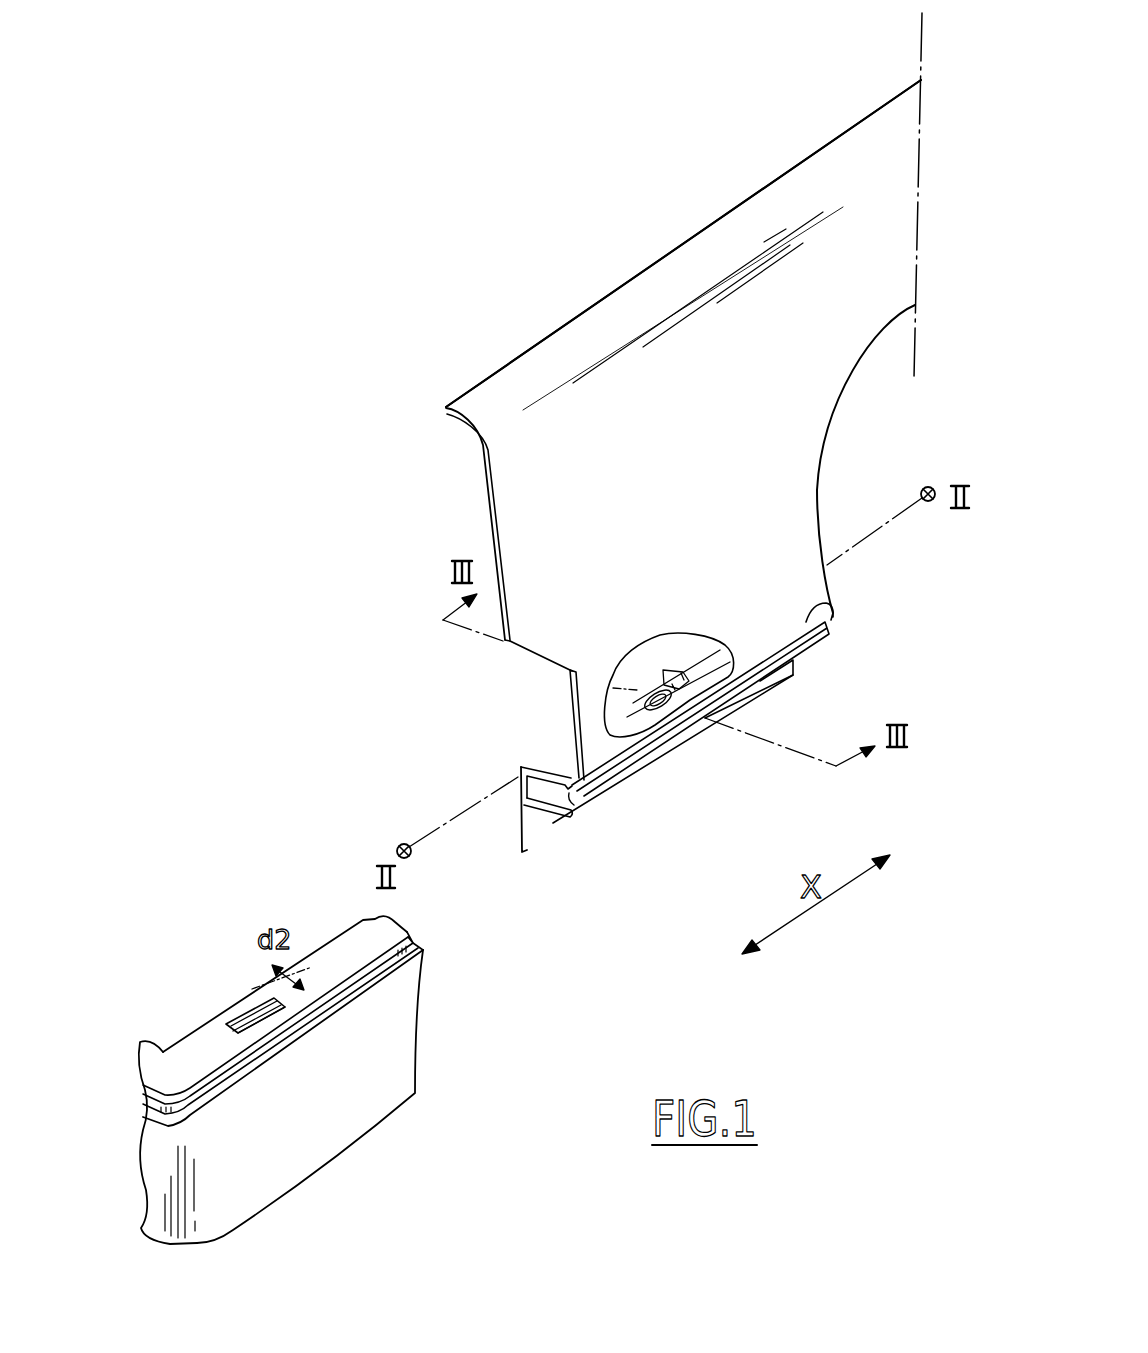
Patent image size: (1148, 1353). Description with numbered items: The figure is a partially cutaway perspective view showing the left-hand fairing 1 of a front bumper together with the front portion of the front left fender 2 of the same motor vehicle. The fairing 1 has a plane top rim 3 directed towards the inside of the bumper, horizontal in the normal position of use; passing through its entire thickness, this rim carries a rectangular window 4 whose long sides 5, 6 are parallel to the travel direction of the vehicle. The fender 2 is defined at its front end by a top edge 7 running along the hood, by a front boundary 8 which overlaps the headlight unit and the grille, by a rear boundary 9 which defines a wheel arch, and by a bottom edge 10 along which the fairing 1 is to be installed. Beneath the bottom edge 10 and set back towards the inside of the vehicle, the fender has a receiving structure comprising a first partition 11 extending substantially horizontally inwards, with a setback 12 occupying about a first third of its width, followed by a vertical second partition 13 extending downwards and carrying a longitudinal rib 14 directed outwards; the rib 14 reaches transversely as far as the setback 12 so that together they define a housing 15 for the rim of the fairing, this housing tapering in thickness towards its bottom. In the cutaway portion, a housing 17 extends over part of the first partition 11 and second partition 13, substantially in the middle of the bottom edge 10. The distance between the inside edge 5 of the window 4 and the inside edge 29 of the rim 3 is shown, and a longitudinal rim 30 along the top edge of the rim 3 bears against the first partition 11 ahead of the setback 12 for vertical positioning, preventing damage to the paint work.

The fairing 1 is at (360, 1098).
The fender 2 is at (727, 292).
The top rim 3 is at (322, 967).
The window 4 is at (240, 1019).
The long side 5 is at (238, 1012).
The long side 6 is at (254, 1012).
The top edge 7 is at (589, 305).
The front boundary 8 is at (490, 525).
The rear boundary 9 is at (848, 380).
The bottom edge 10 is at (829, 606).
The first partition 11 is at (565, 750).
The setback 12 is at (563, 742).
The second partition 13 is at (533, 823).
The longitudinal rib 14 is at (554, 802).
The housing 15 is at (584, 786).
The housing 17 is at (672, 695).
The inside edge 29 is at (335, 933).
The longitudinal rim 30 is at (394, 937).